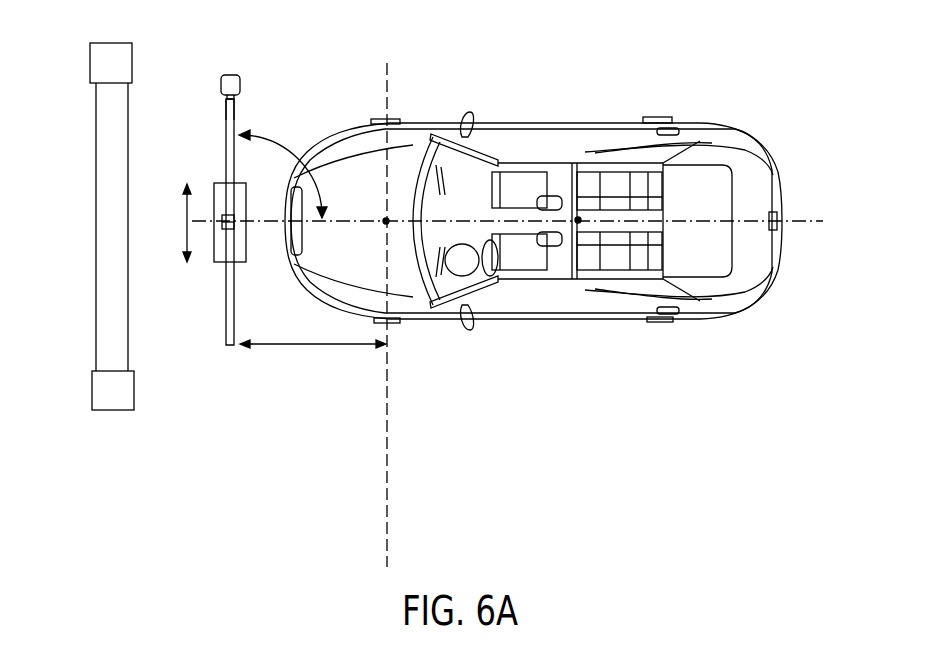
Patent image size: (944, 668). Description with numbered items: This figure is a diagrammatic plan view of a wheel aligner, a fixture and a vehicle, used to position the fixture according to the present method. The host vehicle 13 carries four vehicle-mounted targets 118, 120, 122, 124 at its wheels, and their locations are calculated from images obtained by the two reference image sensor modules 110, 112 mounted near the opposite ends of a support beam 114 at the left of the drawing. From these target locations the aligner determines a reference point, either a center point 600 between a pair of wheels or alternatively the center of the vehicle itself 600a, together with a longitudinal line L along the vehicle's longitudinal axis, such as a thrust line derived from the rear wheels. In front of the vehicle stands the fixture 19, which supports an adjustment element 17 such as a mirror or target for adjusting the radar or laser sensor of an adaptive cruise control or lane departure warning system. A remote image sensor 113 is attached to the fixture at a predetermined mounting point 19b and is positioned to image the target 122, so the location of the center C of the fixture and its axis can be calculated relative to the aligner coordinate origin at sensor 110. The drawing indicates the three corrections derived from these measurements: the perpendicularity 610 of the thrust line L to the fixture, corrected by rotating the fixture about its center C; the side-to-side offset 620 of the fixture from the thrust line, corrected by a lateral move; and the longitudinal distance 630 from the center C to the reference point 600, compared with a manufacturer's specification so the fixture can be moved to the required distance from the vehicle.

The host vehicle 13 is at (776, 158).
The adjustment element 17 is at (223, 264).
The fixture 19 is at (226, 158).
The predetermined mounting point 19b is at (226, 102).
The image sensor module 110 is at (135, 391).
The image sensor module 112 is at (132, 63).
The remote image sensor 113 is at (231, 73).
The support beam 114 is at (96, 148).
The vehicle-mounted target 118 is at (387, 324).
The vehicle-mounted target 120 is at (665, 323).
The vehicle-mounted target 122 is at (386, 119).
The vehicle-mounted target 124 is at (650, 117).
The center point 600 is at (383, 224).
The center of the vehicle 600a is at (578, 220).
The perpendicularity 610 is at (277, 133).
The offset 620 is at (187, 243).
The longitudinal distance 630 is at (282, 345).
The center of the fixture C is at (234, 222).
The longitudinal line L is at (514, 222).